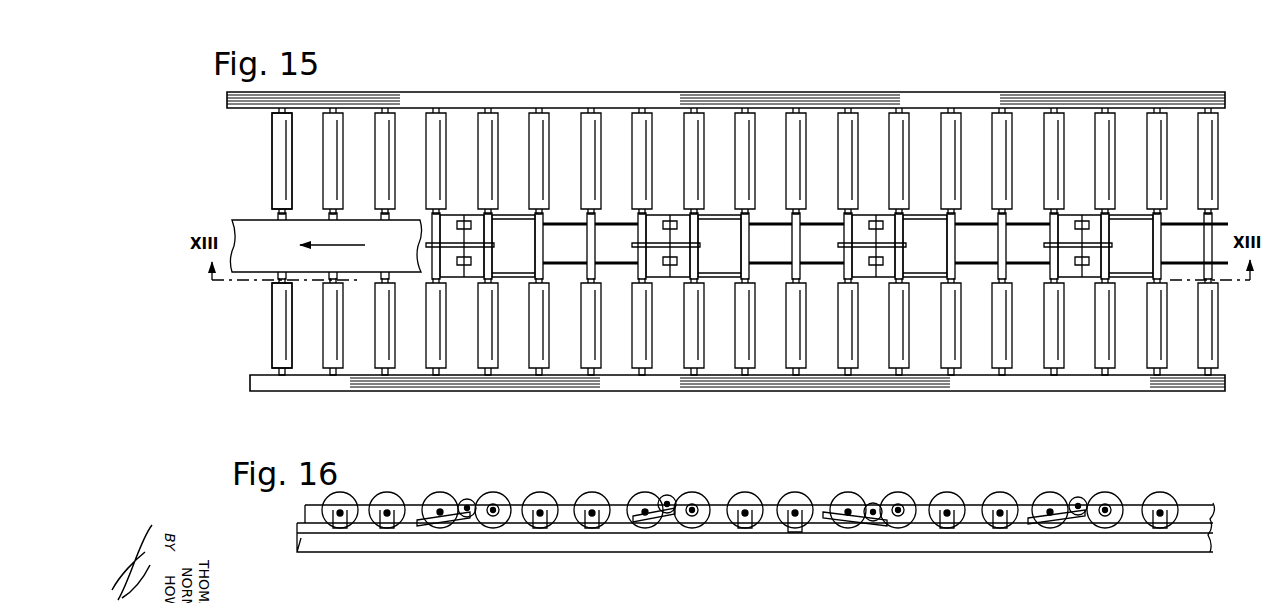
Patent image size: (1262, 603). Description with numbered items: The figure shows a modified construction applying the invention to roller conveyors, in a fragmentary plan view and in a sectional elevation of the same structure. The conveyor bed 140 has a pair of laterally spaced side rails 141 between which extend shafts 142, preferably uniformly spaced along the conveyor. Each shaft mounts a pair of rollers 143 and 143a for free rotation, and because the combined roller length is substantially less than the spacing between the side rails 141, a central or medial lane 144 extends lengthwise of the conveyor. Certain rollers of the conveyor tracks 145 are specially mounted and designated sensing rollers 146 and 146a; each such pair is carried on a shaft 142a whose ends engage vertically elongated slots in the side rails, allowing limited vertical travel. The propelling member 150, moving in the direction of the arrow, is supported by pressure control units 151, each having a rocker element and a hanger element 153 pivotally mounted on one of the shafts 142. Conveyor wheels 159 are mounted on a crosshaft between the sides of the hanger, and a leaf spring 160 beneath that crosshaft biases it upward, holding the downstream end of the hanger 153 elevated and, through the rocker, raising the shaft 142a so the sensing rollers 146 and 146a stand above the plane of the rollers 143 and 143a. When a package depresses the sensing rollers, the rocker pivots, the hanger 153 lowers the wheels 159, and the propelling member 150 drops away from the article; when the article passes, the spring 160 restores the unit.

In FIG. 15, the conveyor bed 140 is at (672, 78).
In FIG. 16, the conveyor bed 140 is at (1068, 561).
In FIG. 15, the side rails 141 is at (712, 97).
In FIG. 16, the side rails 141 is at (968, 545).
In FIG. 15, the shafts 142 is at (694, 372).
In FIG. 16, the shafts 142 is at (694, 510).
In FIG. 15, the shaft 142a is at (805, 373).
In FIG. 16, the shaft 142a is at (795, 506).
In FIG. 15, the roller 143 is at (746, 128).
In FIG. 16, the roller 143 is at (342, 503).
In FIG. 15, the roller 143a is at (745, 352).
In FIG. 15, the medial lane 144 is at (1212, 218).
In FIG. 15, the conveyor tracks 145 is at (265, 150).
In FIG. 15, the sensing roller 146 is at (387, 128).
In FIG. 16, the sensing roller 146 is at (388, 500).
In FIG. 15, the sensing roller 146a is at (386, 350).
In FIG. 15, the propelling member 150 is at (256, 222).
In FIG. 15, the pressure control unit 151 is at (515, 212).
In FIG. 16, the pressure control unit 151 is at (531, 538).
In FIG. 15, the hanger element 153 is at (474, 268).
In FIG. 16, the hanger element 153 is at (465, 527).
In FIG. 15, the conveyor wheels 159 is at (467, 220).
In FIG. 16, the conveyor wheels 159 is at (468, 500).
In FIG. 15, the leaf spring 160 is at (478, 246).
In FIG. 16, the leaf spring 160 is at (668, 508).